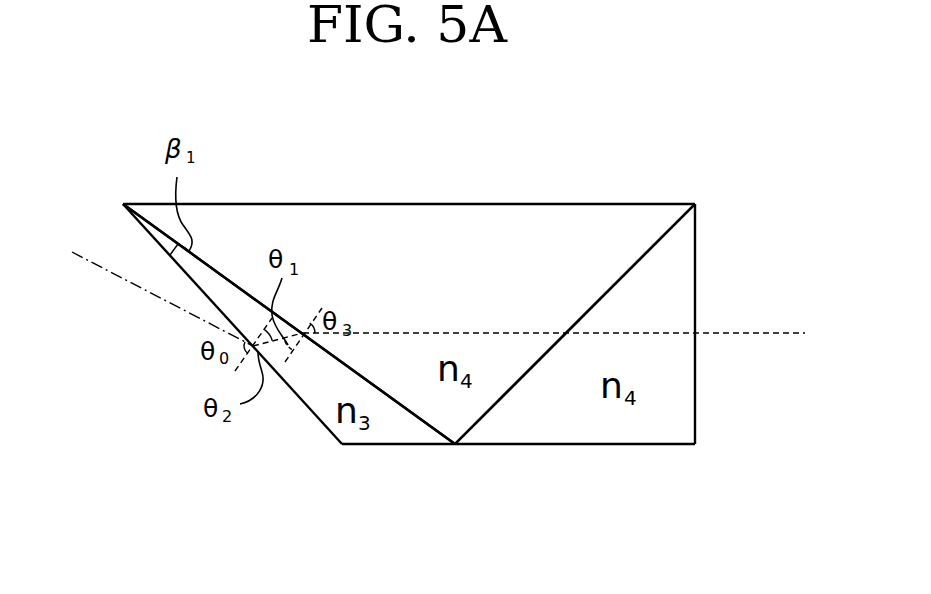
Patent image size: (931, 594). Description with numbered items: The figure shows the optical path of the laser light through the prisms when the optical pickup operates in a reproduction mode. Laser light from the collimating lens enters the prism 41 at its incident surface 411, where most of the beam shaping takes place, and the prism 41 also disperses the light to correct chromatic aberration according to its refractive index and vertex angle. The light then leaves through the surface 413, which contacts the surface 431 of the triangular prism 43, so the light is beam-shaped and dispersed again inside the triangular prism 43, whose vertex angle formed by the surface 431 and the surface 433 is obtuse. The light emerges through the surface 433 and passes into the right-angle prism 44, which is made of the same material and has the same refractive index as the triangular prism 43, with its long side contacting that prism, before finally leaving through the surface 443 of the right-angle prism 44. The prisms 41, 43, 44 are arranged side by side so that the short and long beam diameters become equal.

The prism 41 is at (312, 382).
The surface 411 is at (323, 425).
The surface 413 is at (430, 426).
The triangular prism 43 is at (409, 283).
The surface 431 is at (222, 275).
The surface 433 is at (648, 252).
The right-angle prism 44 is at (620, 357).
The exit surface of third prism 443 is at (695, 298).